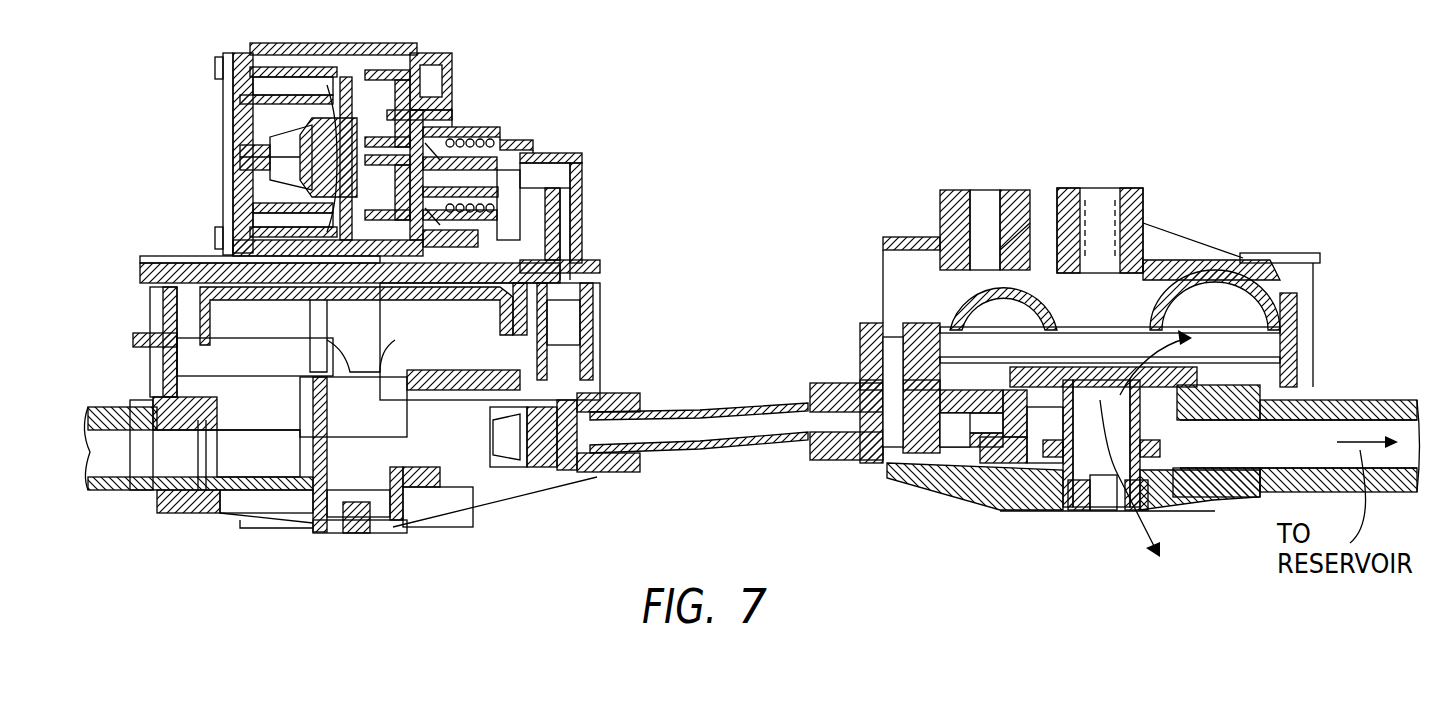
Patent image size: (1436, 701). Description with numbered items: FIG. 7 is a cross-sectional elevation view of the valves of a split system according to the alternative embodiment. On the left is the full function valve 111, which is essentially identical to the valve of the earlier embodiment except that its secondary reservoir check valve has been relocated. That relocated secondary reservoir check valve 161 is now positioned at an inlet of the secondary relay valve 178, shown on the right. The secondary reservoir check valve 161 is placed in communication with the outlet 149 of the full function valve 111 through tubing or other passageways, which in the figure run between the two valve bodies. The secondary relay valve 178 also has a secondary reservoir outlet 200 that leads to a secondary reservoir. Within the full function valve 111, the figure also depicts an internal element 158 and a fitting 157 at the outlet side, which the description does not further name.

The full function valve 111 is at (608, 219).
The diaphragm cup 158 is at (397, 318).
The outlet fitting 157 is at (532, 440).
The outlet 149 is at (668, 410).
The secondary reservoir check valve 161 is at (922, 465).
The secondary relay valve 178 is at (1285, 178).
The secondary reservoir outlet 200 is at (1403, 400).